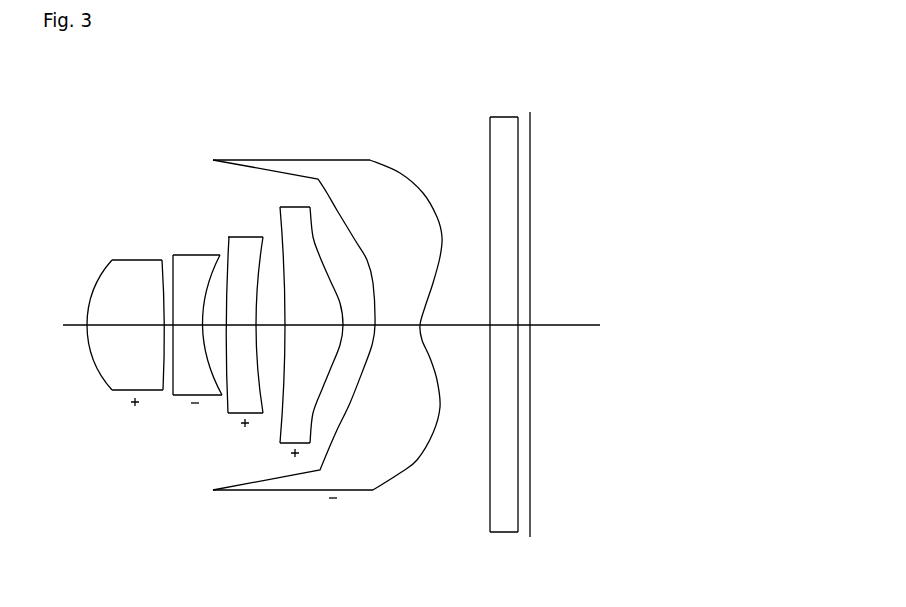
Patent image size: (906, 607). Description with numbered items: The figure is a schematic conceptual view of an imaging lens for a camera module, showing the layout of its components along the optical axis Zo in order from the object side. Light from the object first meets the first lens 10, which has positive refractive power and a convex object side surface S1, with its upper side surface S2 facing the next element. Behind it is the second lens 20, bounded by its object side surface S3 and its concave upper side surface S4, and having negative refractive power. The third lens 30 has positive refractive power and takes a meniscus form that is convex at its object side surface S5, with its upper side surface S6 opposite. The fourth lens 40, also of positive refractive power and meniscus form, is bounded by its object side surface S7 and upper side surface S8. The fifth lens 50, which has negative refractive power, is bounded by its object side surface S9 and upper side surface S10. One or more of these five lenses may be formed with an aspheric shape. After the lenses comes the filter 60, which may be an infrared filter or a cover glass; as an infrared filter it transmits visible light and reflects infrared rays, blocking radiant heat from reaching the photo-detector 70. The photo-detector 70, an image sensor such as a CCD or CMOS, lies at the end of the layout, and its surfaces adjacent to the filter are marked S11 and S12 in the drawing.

The optical axis Zo is at (320, 325).
The first lens 10 is at (117, 333).
The second lens 20 is at (196, 334).
The third lens 30 is at (240, 333).
The fourth lens 40 is at (301, 315).
The fifth lens 50 is at (327, 329).
The filter 60 is at (499, 329).
The photo-detector 70 is at (531, 157).
The object side surface of the first lens S1 is at (97, 284).
The upper side surface of the first lens S2 is at (165, 383).
The object side surface of the second lens S3 is at (170, 256).
The upper side surface of the second lens S4 is at (214, 380).
The object side surface of the third lens S5 is at (233, 252).
The upper side surface of the third lens S6 is at (263, 392).
The object side surface of the fourth lens S7 is at (281, 237).
The upper side surface of the fourth lens S8 is at (312, 430).
The object side surface of the fifth lens S9 is at (333, 216).
The upper side surface of the fifth lens S10 is at (413, 464).
The object-side surface of filter S11 is at (490, 508).
The image-side surface of filter S12 is at (518, 525).